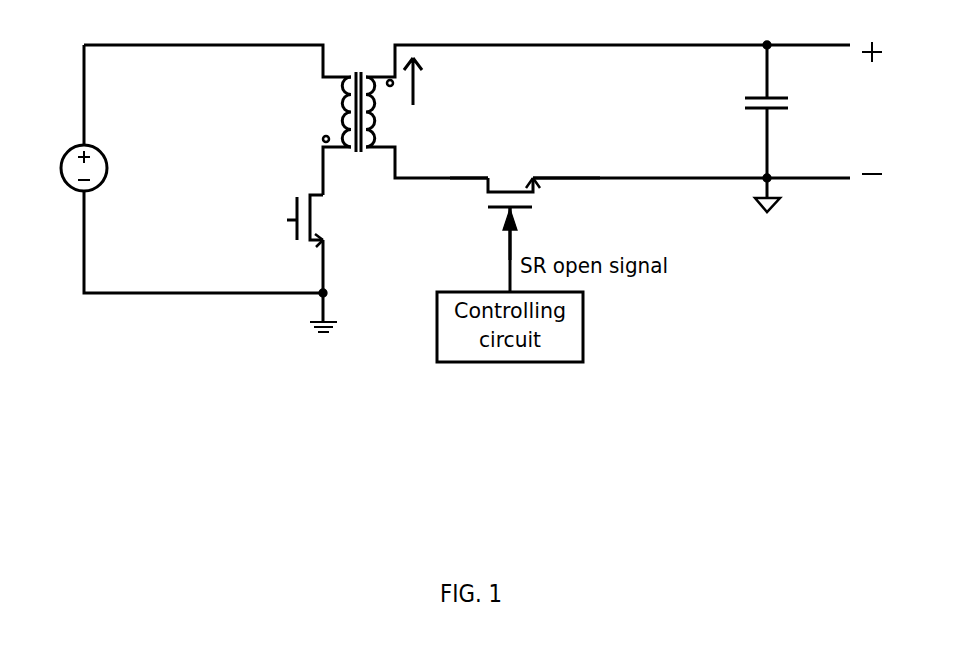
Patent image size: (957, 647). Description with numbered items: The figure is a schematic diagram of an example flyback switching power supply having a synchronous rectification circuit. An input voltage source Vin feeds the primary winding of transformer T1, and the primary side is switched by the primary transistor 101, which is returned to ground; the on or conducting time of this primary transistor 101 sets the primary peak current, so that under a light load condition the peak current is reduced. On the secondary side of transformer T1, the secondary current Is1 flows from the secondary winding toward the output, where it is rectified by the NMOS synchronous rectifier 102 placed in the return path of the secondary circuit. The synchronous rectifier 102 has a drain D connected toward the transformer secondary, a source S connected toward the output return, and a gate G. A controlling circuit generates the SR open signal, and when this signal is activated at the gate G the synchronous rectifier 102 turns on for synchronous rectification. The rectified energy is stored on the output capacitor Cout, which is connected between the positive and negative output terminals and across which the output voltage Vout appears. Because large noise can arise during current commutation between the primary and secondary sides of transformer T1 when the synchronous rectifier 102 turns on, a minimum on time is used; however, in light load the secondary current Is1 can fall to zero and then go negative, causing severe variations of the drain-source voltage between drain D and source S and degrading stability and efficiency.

The input voltage source Vin is at (61, 168).
The transformer T1 is at (370, 72).
The secondary current Is1 is at (428, 81).
The primary transistor 101 is at (326, 221).
The synchronous rectifier 102 is at (514, 221).
The drain D is at (465, 180).
The source S is at (577, 182).
The gate G is at (513, 211).
The output capacitor Cout is at (746, 98).
The output voltage Vout is at (877, 108).